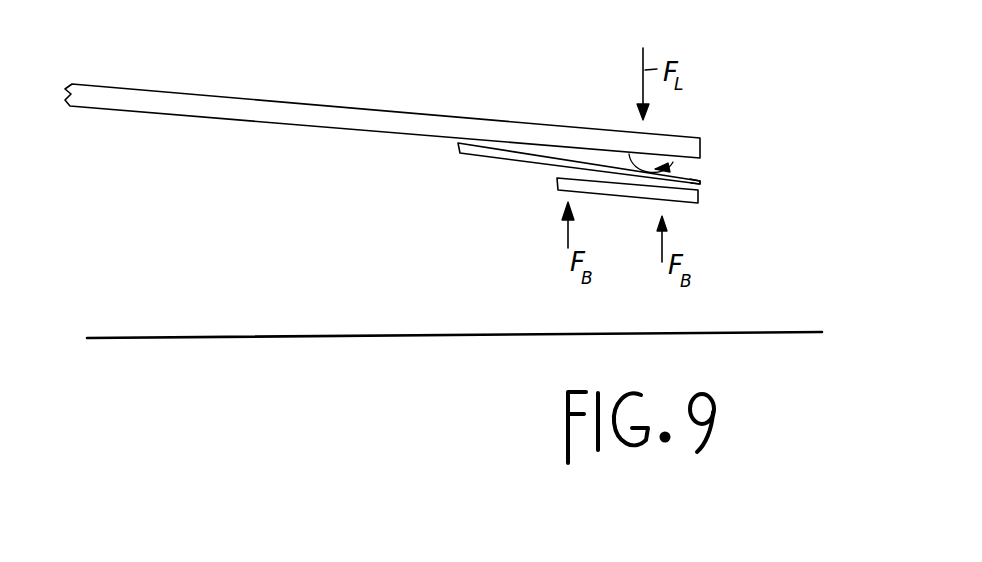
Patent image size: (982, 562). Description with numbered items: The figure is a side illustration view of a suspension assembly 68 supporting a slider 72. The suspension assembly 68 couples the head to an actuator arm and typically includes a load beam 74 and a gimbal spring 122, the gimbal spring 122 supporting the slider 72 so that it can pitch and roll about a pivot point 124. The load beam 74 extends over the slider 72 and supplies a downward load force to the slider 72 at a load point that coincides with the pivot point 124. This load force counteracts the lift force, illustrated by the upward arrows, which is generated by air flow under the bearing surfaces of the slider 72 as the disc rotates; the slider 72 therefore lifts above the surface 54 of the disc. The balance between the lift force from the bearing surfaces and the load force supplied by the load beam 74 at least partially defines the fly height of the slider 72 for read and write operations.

The disk surface 54 is at (769, 326).
The suspension assembly 68 is at (388, 96).
The load beam 74 is at (137, 97).
The pivot point 124 is at (688, 145).
The gimbal spring 122 is at (700, 180).
The slider 72 is at (698, 195).